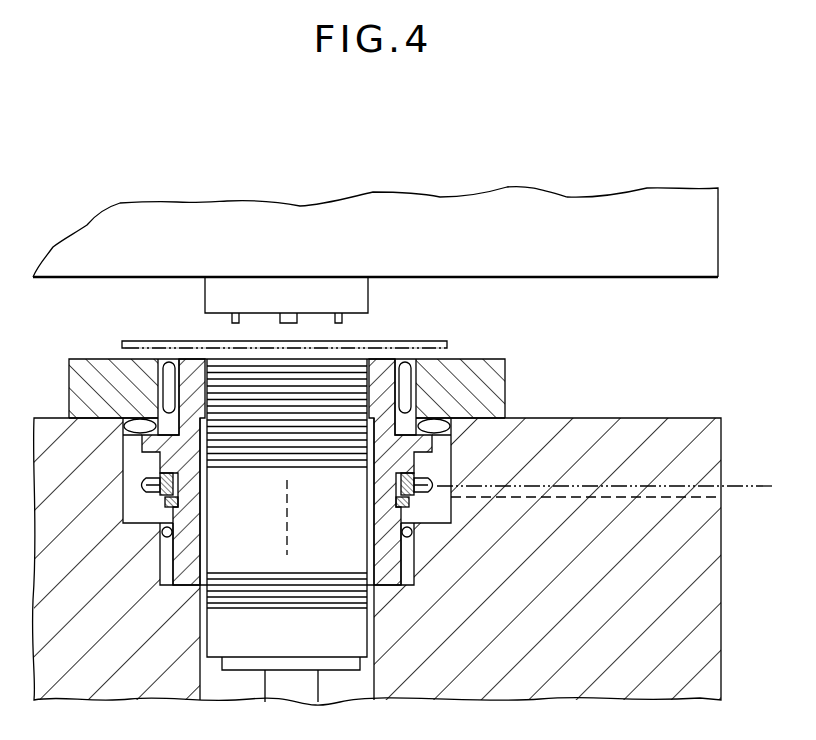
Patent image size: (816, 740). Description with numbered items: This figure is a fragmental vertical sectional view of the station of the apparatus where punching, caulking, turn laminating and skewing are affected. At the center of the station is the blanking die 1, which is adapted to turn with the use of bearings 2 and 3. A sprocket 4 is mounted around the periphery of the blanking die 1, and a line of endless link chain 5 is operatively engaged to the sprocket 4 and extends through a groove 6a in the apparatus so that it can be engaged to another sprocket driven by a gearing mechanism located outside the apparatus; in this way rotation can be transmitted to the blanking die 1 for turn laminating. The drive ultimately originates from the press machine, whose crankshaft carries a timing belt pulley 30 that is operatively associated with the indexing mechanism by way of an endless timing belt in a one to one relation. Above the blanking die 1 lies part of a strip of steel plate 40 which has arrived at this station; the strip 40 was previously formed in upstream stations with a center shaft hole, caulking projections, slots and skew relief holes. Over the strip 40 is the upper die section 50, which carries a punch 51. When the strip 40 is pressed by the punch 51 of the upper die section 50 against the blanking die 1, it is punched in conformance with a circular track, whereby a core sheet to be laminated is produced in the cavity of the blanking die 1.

The blanking die 1 is at (385, 367).
The bearing 2 is at (407, 392).
The bearing 3 is at (431, 422).
The sprocket 4 is at (422, 482).
The endless link chain 5 is at (589, 485).
The groove 6a is at (724, 492).
The timing belt pulley 30 is at (219, 366).
The strip of steel plate 40 is at (141, 340).
The upper die section 50 is at (372, 281).
The punch 51 is at (363, 294).